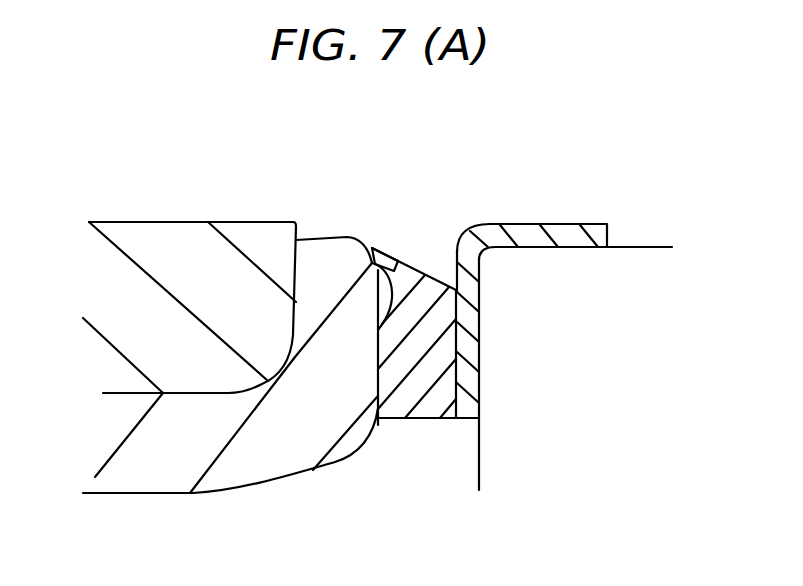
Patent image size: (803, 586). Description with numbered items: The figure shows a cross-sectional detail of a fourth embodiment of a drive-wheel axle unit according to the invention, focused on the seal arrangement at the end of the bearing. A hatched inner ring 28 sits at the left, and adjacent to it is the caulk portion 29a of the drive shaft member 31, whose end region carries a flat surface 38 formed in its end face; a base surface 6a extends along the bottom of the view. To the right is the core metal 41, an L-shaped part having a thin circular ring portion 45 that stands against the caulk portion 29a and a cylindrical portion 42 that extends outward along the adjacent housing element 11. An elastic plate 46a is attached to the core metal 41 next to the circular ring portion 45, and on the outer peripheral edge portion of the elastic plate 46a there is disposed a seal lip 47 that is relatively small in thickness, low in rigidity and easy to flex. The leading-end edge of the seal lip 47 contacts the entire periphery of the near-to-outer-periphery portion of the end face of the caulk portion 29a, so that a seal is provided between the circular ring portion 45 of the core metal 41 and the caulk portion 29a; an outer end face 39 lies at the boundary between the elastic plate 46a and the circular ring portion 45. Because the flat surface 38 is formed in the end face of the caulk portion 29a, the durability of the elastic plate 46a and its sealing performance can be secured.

The inner ring 28 is at (190, 237).
The base surface 6a is at (165, 503).
The caulk portion 29a is at (318, 422).
The seal lip 47 is at (399, 262).
The elastic plate 46a is at (404, 398).
The outer end face 39 is at (456, 288).
The circular ring portion 45 is at (470, 381).
The cylindrical portion 42 is at (541, 244).
The core metal 41 is at (598, 214).
The housing 11 is at (597, 272).
The flat surface 38 is at (378, 337).
The drive shaft member 31 is at (529, 445).